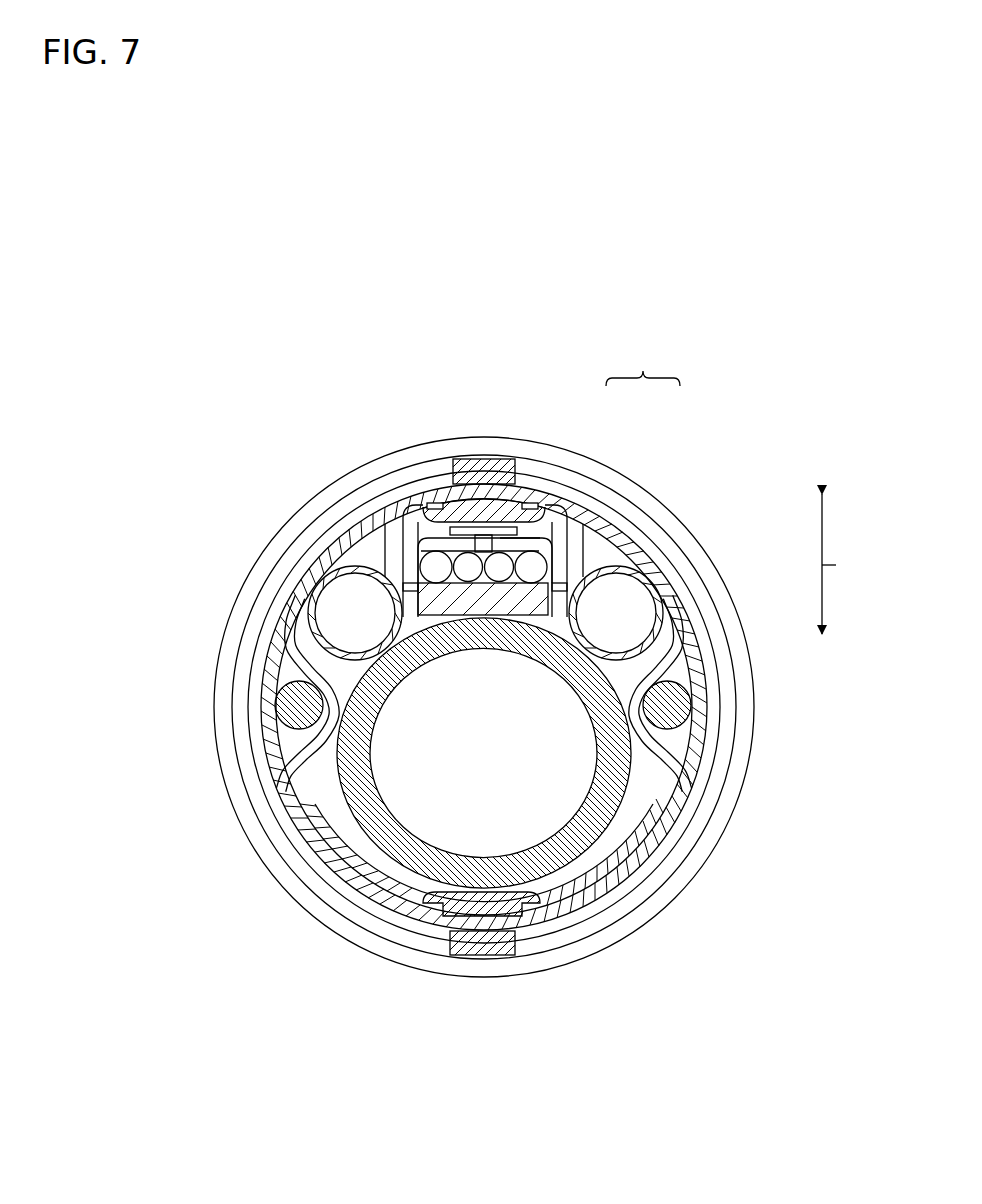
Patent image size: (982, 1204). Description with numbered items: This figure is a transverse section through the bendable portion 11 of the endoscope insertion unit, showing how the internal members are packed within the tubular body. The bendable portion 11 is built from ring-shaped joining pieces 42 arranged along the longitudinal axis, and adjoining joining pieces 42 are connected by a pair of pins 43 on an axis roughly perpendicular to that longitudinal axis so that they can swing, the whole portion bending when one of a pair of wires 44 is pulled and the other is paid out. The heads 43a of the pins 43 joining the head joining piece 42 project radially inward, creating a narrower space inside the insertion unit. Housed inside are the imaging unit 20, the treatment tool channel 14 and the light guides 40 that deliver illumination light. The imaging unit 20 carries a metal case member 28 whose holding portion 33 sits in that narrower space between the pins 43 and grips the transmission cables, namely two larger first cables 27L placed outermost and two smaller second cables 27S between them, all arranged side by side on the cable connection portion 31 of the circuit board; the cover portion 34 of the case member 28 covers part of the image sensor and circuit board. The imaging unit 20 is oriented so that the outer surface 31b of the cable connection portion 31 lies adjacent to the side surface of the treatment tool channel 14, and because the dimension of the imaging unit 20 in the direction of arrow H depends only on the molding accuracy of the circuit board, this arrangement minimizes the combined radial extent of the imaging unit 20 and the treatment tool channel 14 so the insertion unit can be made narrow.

The bendable portion 11 is at (250, 414).
The treatment tool channel 14 is at (582, 777).
The imaging unit 20 is at (395, 560).
The first cables 27L is at (433, 562).
The second cables 27S is at (466, 560).
The case member 28 is at (643, 364).
The cable connection portion 31 is at (628, 556).
The outer surface 31b is at (427, 627).
The holding portion 33 is at (493, 536).
The cover portion 34 is at (530, 538).
The light guides 40 is at (333, 596).
The joining pieces 42 is at (352, 876).
The pins 43 is at (484, 470).
The heads 43a is at (548, 905).
The wires 44 is at (275, 706).
The arrow H is at (850, 564).